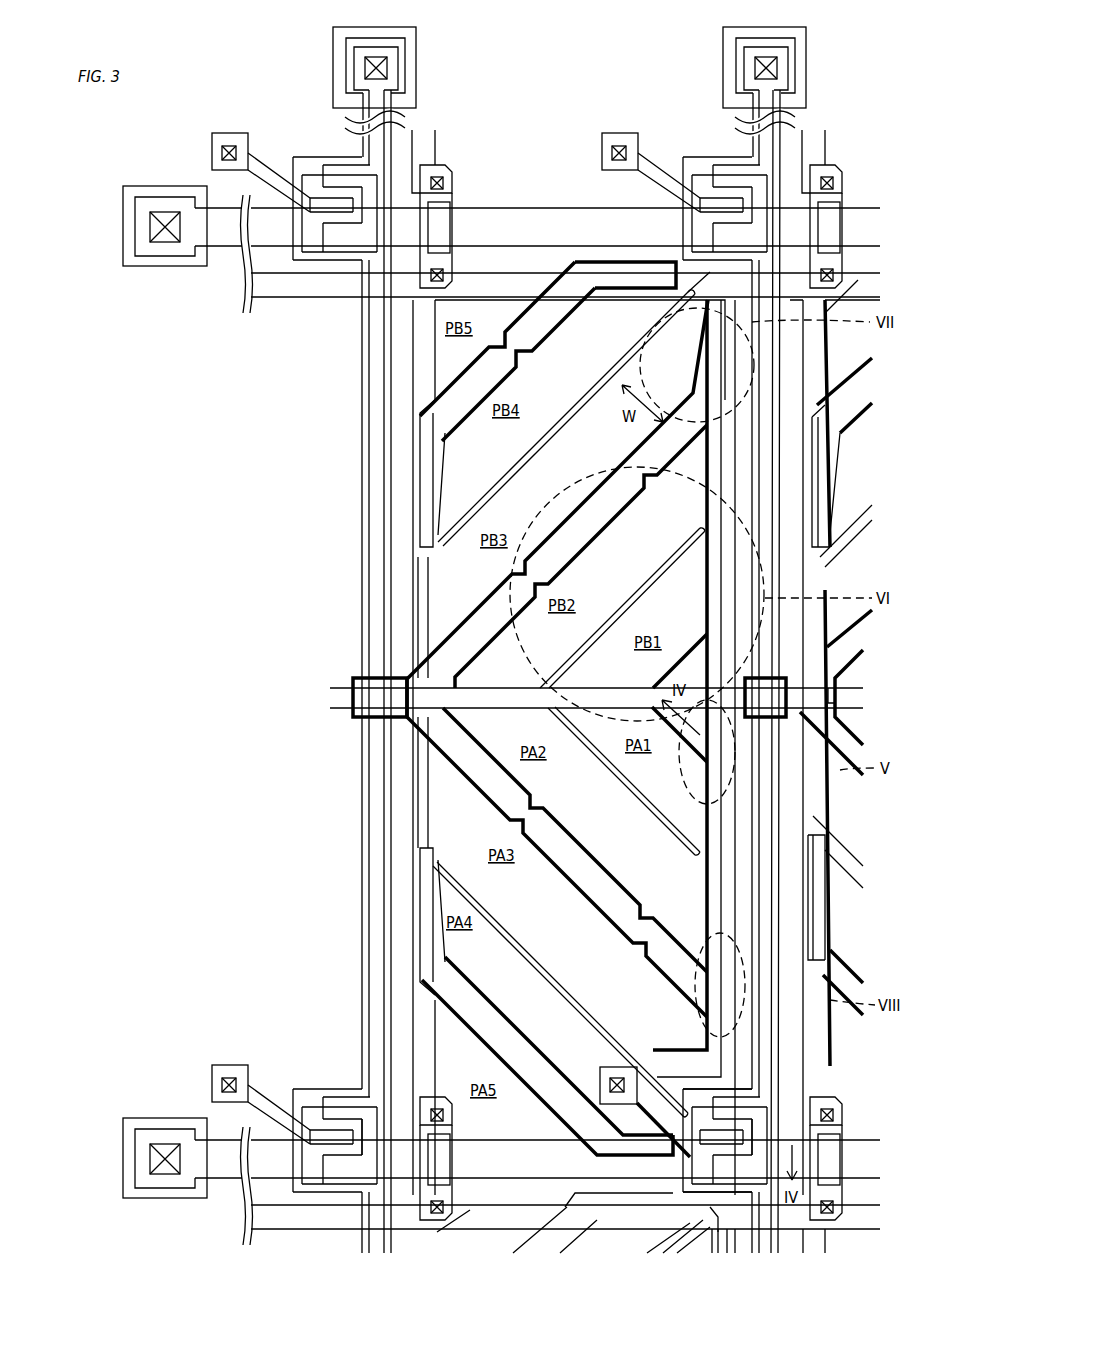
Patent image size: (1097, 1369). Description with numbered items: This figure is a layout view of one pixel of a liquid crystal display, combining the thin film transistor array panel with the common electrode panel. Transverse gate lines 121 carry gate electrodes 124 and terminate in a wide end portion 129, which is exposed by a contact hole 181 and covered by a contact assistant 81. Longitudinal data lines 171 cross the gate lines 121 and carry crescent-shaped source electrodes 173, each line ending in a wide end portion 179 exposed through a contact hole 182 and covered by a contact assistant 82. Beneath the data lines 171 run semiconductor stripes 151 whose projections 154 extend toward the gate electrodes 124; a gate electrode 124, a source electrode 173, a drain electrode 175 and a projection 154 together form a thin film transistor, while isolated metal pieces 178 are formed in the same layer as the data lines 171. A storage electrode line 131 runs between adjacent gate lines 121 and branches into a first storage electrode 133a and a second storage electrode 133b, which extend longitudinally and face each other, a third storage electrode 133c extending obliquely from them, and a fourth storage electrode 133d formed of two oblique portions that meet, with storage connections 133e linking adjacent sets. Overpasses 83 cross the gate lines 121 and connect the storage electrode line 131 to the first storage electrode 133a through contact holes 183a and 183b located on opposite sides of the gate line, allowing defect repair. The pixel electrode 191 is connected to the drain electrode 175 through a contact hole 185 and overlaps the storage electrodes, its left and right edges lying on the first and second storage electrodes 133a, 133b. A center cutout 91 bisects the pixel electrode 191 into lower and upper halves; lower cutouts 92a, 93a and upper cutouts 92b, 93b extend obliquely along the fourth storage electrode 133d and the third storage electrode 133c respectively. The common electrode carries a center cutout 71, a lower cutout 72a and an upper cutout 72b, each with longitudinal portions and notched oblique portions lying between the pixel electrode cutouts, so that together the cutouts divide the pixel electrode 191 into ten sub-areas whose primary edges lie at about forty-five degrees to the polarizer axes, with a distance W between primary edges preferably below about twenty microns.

The contact assistant 82 is at (416, 40).
The contact hole 182 is at (387, 68).
The end portion of data line 179 is at (345, 70).
The contact assistant 81 is at (140, 1200).
The contact hole 181 is at (165, 1143).
The end portion of gate line 129 is at (180, 1200).
The gate line 121 is at (596, 262).
The storage electrode line 131 is at (535, 262).
The isolated metal piece 178 is at (412, 225).
The data line 171 is at (369, 816).
The semiconductor stripe 151 is at (391, 634).
The overpass 83 is at (437, 163).
The contact hole 183b is at (452, 180).
The contact hole 183a is at (443, 270).
The contact hole 185 is at (617, 1067).
The drain electrode 175 is at (600, 1092).
The pixel electrode 191 is at (418, 578).
The third storage electrode 133c is at (500, 460).
The second storage electrode 133b is at (820, 432).
The fourth storage electrode 133d is at (800, 576).
The first storage electrode 133a is at (400, 518).
The storage connection 133e is at (355, 688).
The upper cutout of common electrode 72b is at (562, 333).
The lower cutout of common electrode 72a is at (472, 1040).
The center cutout of common electrode 71 is at (575, 512).
The upper cutout 93b is at (568, 404).
The lower cutout 93a is at (568, 972).
The upper cutout 92b is at (640, 588).
The lower cutout 92a is at (603, 775).
The center cutout 91 is at (830, 645).
The projection of semiconductor stripe 154 is at (680, 1170).
The gate electrode 124 is at (692, 1175).
The source electrode 173 is at (730, 1172).